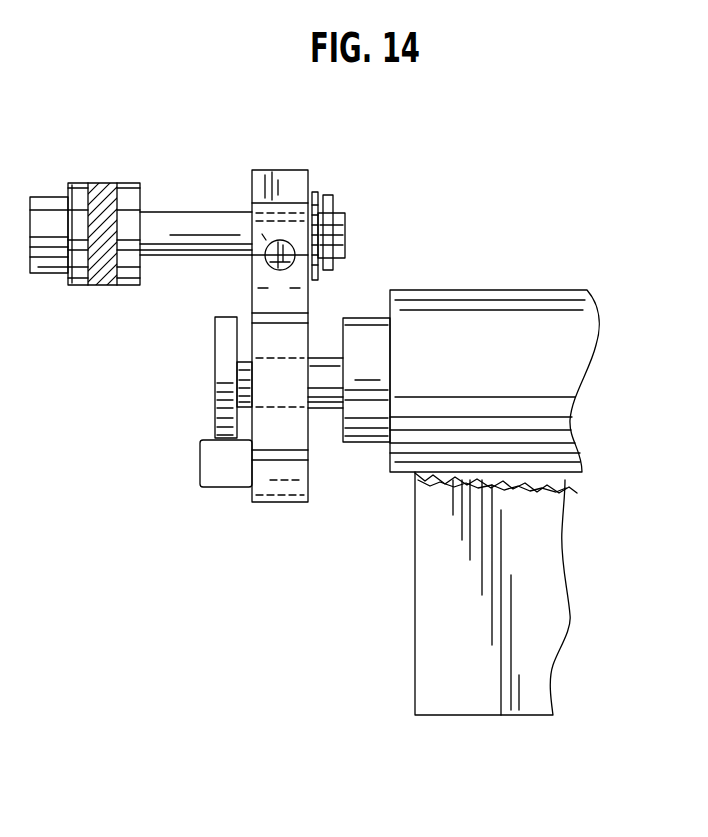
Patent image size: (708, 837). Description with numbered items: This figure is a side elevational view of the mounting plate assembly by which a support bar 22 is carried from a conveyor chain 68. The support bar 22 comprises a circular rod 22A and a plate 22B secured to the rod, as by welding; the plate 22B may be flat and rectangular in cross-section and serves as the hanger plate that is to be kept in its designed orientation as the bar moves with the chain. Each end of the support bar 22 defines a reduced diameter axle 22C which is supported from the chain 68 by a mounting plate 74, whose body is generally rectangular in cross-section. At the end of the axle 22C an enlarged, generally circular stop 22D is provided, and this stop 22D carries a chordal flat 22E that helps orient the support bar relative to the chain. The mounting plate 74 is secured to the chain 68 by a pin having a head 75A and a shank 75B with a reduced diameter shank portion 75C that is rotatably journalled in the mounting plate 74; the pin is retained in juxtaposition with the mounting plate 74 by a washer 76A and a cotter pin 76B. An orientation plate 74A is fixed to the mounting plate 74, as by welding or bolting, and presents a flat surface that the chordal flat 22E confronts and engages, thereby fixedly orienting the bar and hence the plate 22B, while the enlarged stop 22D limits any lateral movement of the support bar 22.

The support bar 22 is at (462, 291).
The circular rod 22A is at (513, 308).
The plate 22B is at (428, 585).
The reduced diameter axle 22C is at (328, 408).
The stop 22D is at (222, 352).
The chordal flat 22E is at (228, 443).
The chain 68 is at (130, 185).
The mounting plate 74 is at (311, 171).
The orientation plate 74A is at (212, 480).
The head 75A is at (52, 197).
The shank 75B is at (188, 222).
The reduced diameter shank portion 75C is at (262, 235).
The washer 76A is at (317, 282).
The cotter pin 76B is at (335, 200).